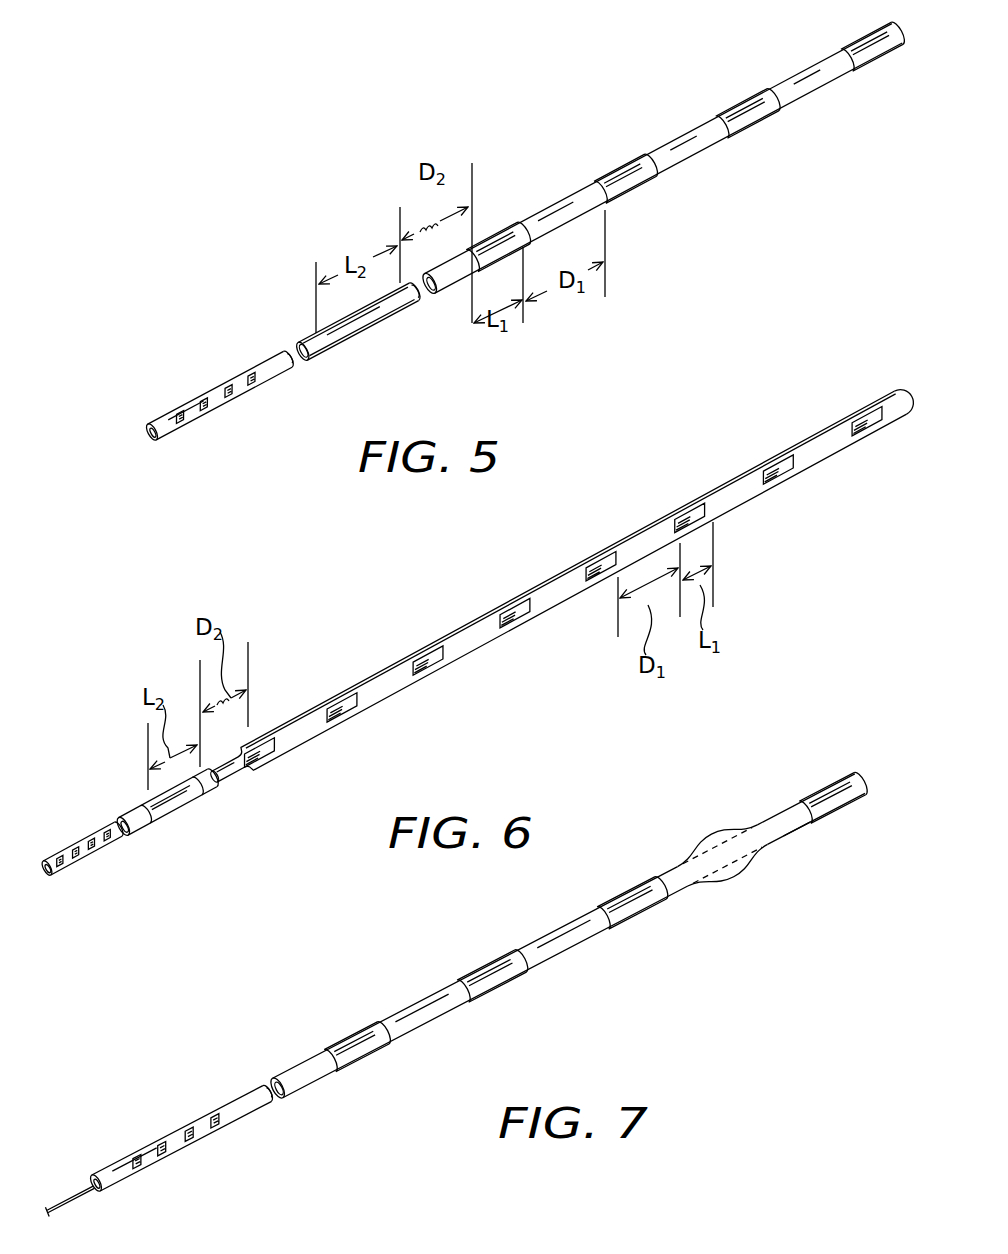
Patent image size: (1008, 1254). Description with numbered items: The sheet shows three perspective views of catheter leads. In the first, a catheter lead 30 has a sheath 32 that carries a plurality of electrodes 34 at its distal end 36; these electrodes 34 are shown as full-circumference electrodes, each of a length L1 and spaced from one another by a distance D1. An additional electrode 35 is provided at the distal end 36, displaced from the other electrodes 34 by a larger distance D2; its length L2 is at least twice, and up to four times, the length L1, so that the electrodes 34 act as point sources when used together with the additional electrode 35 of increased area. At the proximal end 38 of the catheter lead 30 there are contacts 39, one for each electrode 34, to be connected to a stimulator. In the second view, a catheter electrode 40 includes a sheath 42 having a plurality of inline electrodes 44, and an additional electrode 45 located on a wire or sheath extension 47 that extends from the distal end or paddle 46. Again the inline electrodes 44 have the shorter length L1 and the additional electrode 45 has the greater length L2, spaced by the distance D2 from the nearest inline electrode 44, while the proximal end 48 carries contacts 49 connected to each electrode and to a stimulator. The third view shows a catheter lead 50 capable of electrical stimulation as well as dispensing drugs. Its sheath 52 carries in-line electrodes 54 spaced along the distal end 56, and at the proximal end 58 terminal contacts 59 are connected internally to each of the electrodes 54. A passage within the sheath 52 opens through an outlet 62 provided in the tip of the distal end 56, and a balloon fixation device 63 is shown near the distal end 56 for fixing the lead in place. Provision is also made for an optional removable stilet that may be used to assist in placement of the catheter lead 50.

In FIG. 5, the catheter lead 30 is at (525, 231).
In FIG. 5, the sheath 32 is at (662, 192).
In FIG. 5, the electrodes 34 is at (500, 238).
In FIG. 5, the additional electrode 35 is at (355, 340).
In FIG. 5, the distal end 36 is at (850, 23).
In FIG. 5, the proximal end 38 is at (229, 337).
In FIG. 5, the contacts 39 is at (185, 406).
In FIG. 6, the catheter electrode 40 is at (479, 606).
In FIG. 6, the sheath 42 is at (562, 576).
In FIG. 6, the inline electrodes 44 is at (341, 716).
In FIG. 6, the additional electrode 45 is at (170, 802).
In FIG. 6, the distal end or paddle 46 is at (878, 379).
In FIG. 6, the wire or sheath extension 47 is at (218, 790).
In FIG. 6, the proximal end 48 is at (99, 798).
In FIG. 6, the contacts 49 is at (110, 834).
In FIG. 7, the catheter lead 50 is at (455, 964).
In FIG. 7, the sheath 52 is at (569, 912).
In FIG. 7, the in-line electrodes 54 is at (363, 1050).
In FIG. 7, the distal end 56 is at (829, 862).
In FIG. 7, the proximal end 58 is at (160, 1131).
In FIG. 7, the terminal contacts 59 is at (158, 1137).
In FIG. 7, the outlet 62 is at (860, 773).
In FIG. 7, the balloon fixation device 63 is at (737, 877).